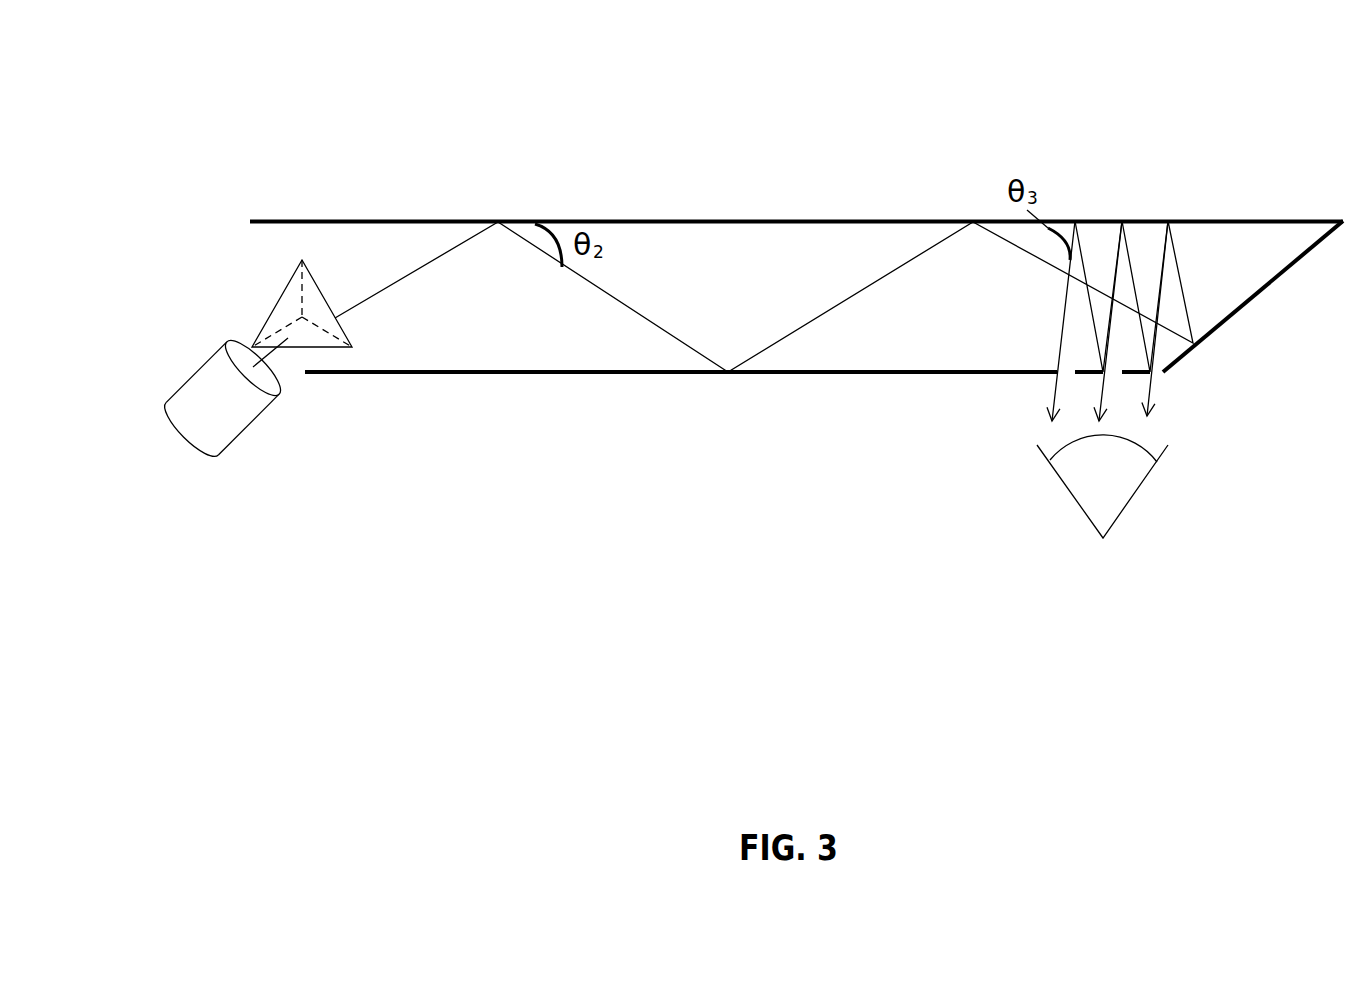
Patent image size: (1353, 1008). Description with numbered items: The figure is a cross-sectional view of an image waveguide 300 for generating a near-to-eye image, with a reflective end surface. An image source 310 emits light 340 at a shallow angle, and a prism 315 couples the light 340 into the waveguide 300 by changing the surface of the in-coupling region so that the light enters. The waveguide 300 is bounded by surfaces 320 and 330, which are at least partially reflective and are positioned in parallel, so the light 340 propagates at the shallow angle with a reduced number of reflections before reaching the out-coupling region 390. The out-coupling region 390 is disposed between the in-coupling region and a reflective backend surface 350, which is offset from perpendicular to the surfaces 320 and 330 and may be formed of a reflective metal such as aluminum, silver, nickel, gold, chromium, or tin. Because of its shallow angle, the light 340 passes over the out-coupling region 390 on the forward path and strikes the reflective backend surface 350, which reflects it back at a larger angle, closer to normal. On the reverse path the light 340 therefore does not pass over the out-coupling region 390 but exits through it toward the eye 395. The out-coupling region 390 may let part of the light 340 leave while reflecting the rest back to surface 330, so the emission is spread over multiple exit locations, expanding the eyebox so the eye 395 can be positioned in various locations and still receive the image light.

The waveguide 300 is at (651, 592).
The image source 310 is at (217, 422).
The prism 315 is at (265, 318).
The surface 320 is at (862, 375).
The surface 330 is at (864, 226).
The light 340 is at (383, 288).
The reflective backend surface 350 is at (1263, 285).
The out-coupling region 390 is at (1163, 372).
The eye 395 is at (1108, 518).